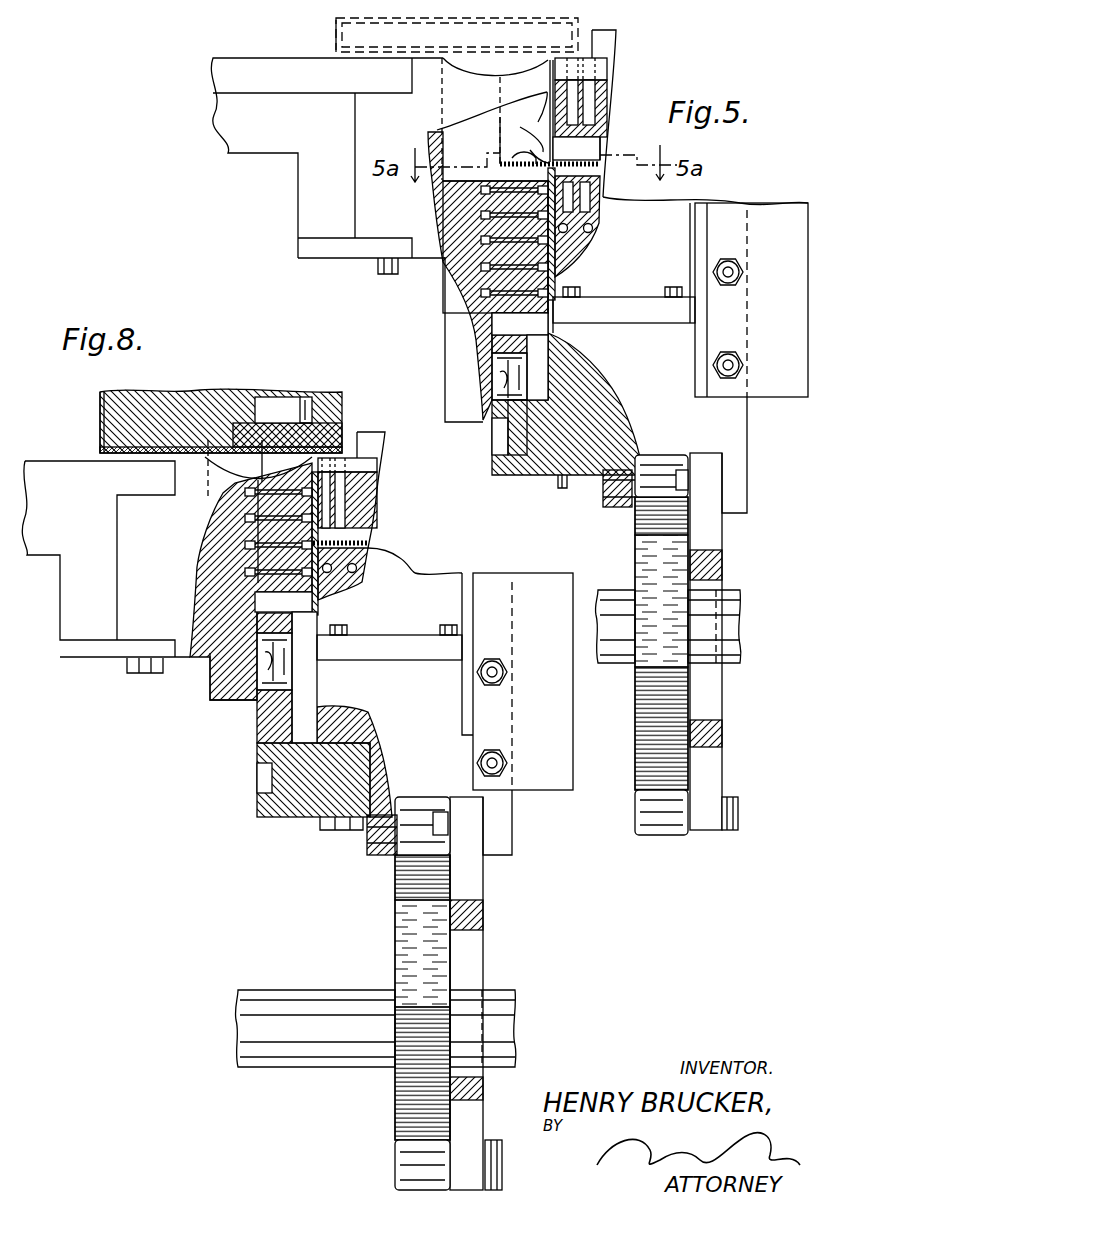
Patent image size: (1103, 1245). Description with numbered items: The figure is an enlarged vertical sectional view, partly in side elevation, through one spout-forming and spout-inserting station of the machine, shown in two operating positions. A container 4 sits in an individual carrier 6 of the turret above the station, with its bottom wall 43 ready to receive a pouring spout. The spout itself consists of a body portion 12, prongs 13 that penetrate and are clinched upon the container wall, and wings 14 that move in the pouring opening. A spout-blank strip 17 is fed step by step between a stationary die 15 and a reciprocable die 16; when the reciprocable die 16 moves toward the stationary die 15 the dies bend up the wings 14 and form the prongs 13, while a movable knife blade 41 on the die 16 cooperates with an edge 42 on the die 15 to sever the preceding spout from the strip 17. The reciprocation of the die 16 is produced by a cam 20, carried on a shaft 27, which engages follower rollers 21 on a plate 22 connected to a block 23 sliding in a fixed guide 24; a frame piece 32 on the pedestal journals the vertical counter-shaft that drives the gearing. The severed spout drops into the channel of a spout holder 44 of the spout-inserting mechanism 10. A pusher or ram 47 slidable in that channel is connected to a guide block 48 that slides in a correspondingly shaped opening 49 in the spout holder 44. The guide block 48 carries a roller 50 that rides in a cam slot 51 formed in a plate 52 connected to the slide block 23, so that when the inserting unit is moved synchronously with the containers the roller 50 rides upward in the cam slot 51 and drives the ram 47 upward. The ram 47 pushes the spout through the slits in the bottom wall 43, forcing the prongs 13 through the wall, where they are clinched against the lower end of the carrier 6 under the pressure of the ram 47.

In FIG. 5, the container 4 is at (336, 31).
In FIG. 8, the container 4 is at (93, 427).
In FIG. 8, the individual carrier 6 is at (150, 406).
In FIG. 5, the spout-inserting mechanism 10 is at (437, 346).
In FIG. 8, the spout-inserting mechanism 10 is at (199, 669).
In FIG. 5, the body portion 12 is at (499, 157).
In FIG. 8, the body portion 12 is at (252, 463).
In FIG. 5, the prongs 13 is at (523, 138).
In FIG. 8, the prongs 13 is at (262, 455).
In FIG. 5, the wings 14 is at (538, 122).
In FIG. 8, the wings 14 is at (300, 414).
In FIG. 5, the stationary die 15 is at (600, 129).
In FIG. 8, the stationary die 15 is at (370, 455).
In FIG. 5, the reciprocable die 16 is at (598, 198).
In FIG. 8, the reciprocable die 16 is at (357, 519).
In FIG. 5, the spout-blank strip 17 is at (601, 159).
In FIG. 5, the cam 20 is at (672, 701).
In FIG. 8, the cam 20 is at (405, 922).
In FIG. 5, the follower rollers 21 is at (668, 470).
In FIG. 8, the follower rollers 21 is at (418, 808).
In FIG. 5, the plate 22 is at (705, 547).
In FIG. 8, the plate 22 is at (470, 890).
In FIG. 5, the block 23 is at (732, 498).
In FIG. 8, the block 23 is at (498, 833).
In FIG. 5, the fixed guide 24 is at (801, 385).
In FIG. 8, the fixed guide 24 is at (555, 730).
In FIG. 5, the shaft 27 is at (723, 636).
In FIG. 8, the shaft 27 is at (248, 1000).
In FIG. 5, the frame piece 32 is at (312, 190).
In FIG. 5, the movable knife blade 41 is at (523, 162).
In FIG. 8, the movable knife blade 41 is at (262, 518).
In FIG. 5, the edge 42 is at (576, 149).
In FIG. 8, the edge 42 is at (312, 548).
In FIG. 5, the bottom wall 43 is at (484, 55).
In FIG. 5, the spout holder 44 is at (430, 250).
In FIG. 8, the spout holder 44 is at (137, 623).
In FIG. 5, the pusher or ram 47 is at (508, 281).
In FIG. 5, the guide block 48 is at (460, 373).
In FIG. 8, the guide block 48 is at (223, 690).
In FIG. 5, the opening 49 is at (440, 207).
In FIG. 5, the roller 50 is at (493, 413).
In FIG. 8, the roller 50 is at (283, 681).
In FIG. 5, the cam slot 51 is at (508, 433).
In FIG. 8, the cam slot 51 is at (262, 708).
In FIG. 5, the plate 52 is at (513, 328).
In FIG. 8, the plate 52 is at (258, 746).